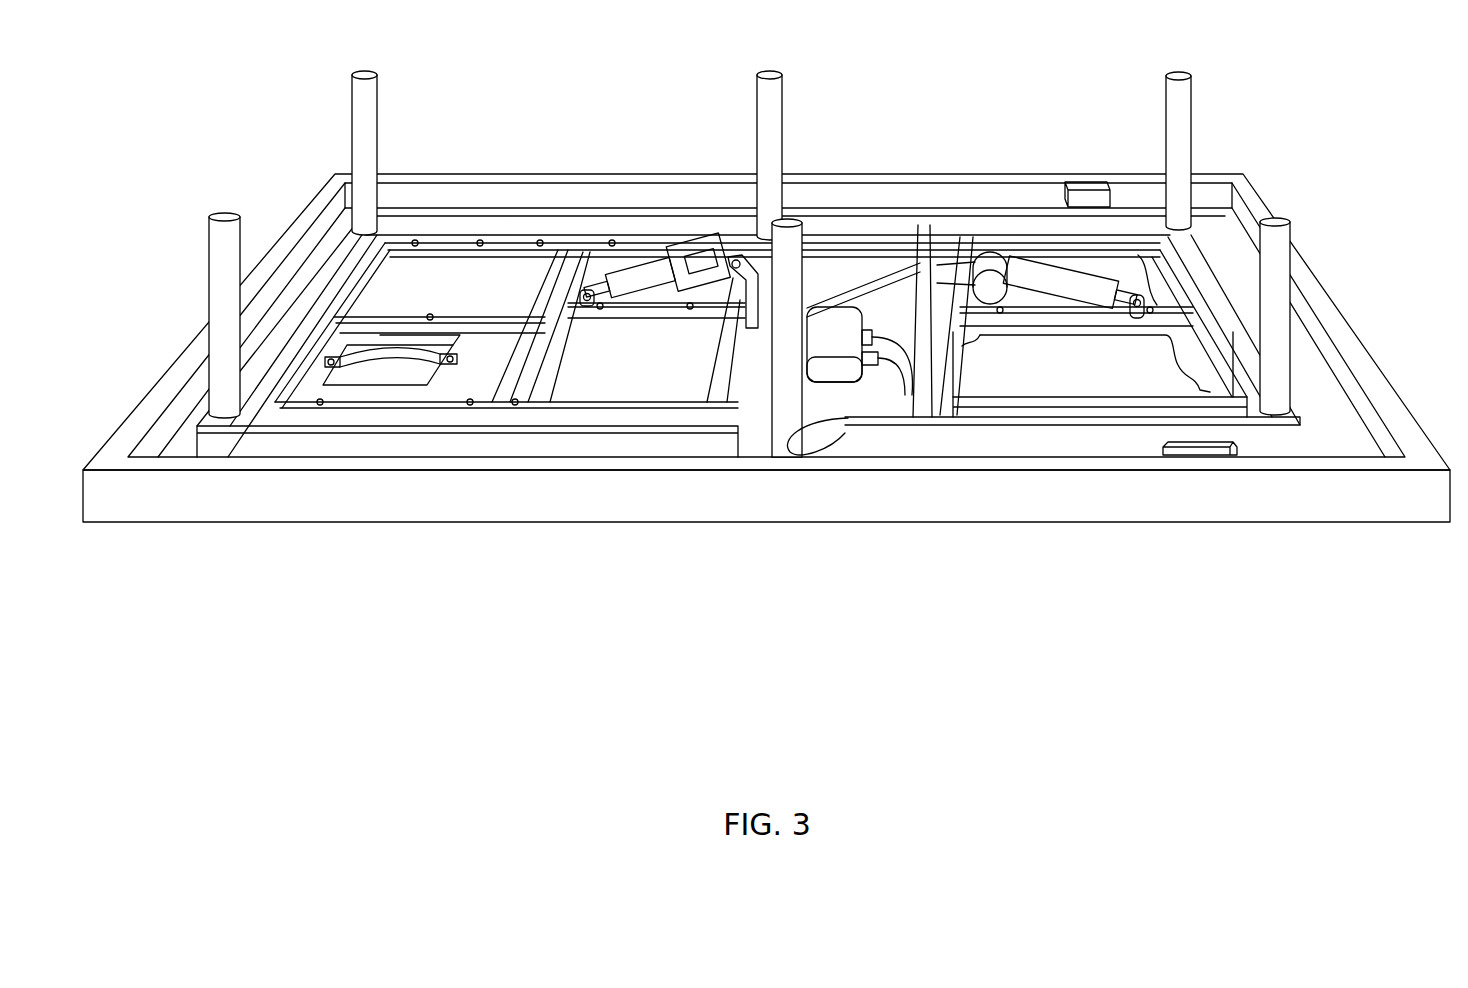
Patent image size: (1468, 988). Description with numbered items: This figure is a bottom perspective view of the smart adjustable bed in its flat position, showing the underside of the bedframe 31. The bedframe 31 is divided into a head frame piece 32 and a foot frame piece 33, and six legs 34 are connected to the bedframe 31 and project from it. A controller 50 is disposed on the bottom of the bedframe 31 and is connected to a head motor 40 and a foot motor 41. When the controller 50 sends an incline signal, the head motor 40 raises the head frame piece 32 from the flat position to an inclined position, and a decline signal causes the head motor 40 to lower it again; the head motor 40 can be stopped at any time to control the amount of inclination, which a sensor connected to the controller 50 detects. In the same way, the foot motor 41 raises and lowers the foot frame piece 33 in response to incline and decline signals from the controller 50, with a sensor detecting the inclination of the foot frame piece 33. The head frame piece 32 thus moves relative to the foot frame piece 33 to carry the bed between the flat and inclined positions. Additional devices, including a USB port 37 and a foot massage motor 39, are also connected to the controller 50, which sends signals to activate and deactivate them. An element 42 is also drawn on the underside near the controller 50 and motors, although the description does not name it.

The bedframe 31 is at (707, 573).
The head frame piece 32 is at (975, 522).
The foot frame piece 33 is at (440, 173).
The legs 34 is at (350, 103).
The USB port 37 is at (1085, 188).
The foot massage motor 39 is at (378, 375).
The head motor 40 is at (1043, 282).
The foot motor 41 is at (641, 273).
The connecting rod 42 is at (903, 243).
The controller 50 is at (835, 330).